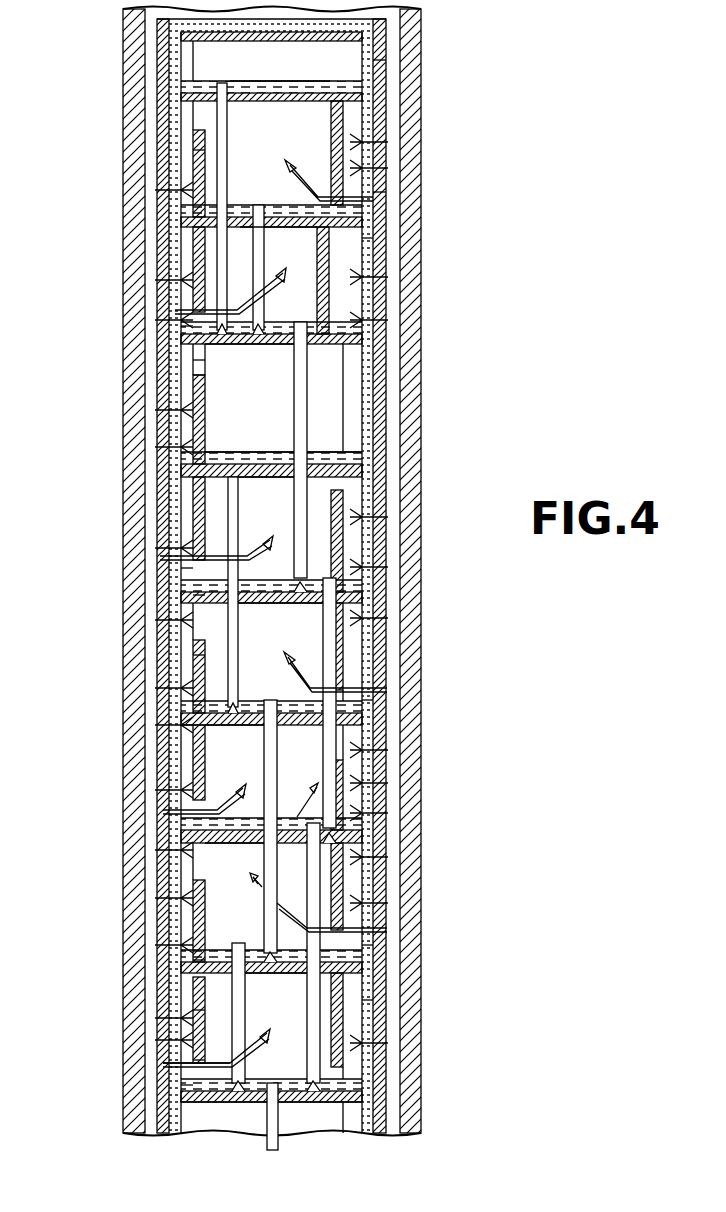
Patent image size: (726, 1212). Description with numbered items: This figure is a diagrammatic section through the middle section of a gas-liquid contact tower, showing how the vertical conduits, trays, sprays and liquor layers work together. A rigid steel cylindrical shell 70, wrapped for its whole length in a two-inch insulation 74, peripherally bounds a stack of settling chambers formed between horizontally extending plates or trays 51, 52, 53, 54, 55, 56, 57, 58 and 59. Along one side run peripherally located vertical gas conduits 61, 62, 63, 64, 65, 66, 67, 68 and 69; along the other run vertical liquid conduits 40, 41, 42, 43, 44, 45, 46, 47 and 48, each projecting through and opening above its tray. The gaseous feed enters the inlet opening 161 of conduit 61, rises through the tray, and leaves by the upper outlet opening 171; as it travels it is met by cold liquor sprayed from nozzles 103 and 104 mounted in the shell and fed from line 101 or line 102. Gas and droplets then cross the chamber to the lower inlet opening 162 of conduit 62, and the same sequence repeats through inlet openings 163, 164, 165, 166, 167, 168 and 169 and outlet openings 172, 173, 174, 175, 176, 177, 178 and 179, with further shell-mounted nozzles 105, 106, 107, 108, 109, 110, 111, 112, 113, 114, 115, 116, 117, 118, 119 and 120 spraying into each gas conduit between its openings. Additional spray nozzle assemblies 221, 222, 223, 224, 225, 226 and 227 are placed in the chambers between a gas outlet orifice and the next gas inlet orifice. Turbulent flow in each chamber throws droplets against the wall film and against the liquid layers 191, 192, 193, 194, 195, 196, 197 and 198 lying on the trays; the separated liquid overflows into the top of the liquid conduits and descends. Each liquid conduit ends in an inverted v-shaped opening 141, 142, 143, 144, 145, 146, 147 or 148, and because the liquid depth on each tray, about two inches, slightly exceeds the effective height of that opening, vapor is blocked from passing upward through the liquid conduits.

The vertical liquid conduit 40 is at (270, 1140).
The vertical liquid conduit 41 is at (312, 1043).
The vertical liquid conduit 42 is at (248, 1016).
The vertical liquid conduit 43 is at (262, 770).
The vertical liquid conduit 44 is at (322, 636).
The vertical liquid conduit 45 is at (240, 490).
The vertical liquid conduit 46 is at (292, 410).
The vertical liquid conduit 47 is at (262, 235).
The vertical liquid conduit 48 is at (224, 85).
The tray 51 is at (352, 1135).
The tray 52 is at (195, 960).
The tray 53 is at (218, 835).
The tray 54 is at (277, 725).
The tray 55 is at (195, 595).
The tray 56 is at (233, 477).
The tray 57 is at (308, 370).
The tray 58 is at (372, 221).
The tray 59 is at (292, 81).
The gas conduit 61 is at (375, 1001).
The gas conduit 62 is at (195, 1010).
The gas conduit 63 is at (375, 761).
The gas conduit 64 is at (200, 655).
The gas conduit 65 is at (368, 541).
The gas conduit 66 is at (206, 405).
The gas conduit 67 is at (368, 259).
The gas conduit 68 is at (198, 150).
The gas conduit 69 is at (385, 65).
The shell 70 is at (405, 302).
The insulation 74 is at (405, 412).
The line 101 is at (148, 48).
The line 102 is at (396, 123).
The spray nozzle 103 is at (400, 1031).
The spray nozzle 104 is at (185, 1045).
The spray nozzle 105 is at (367, 871).
The spray nozzle 106 is at (367, 791).
The spray nozzle 107 is at (192, 998).
The spray nozzle 108 is at (365, 502).
The spray nozzle 109 is at (367, 277).
The spray nozzle 110 is at (362, 80).
The spray nozzle 111 is at (185, 940).
The spray nozzle 112 is at (192, 898).
The spray nozzle 113 is at (192, 726).
The spray nozzle 114 is at (192, 688).
The spray nozzle 115 is at (192, 447).
The spray nozzle 116 is at (192, 412).
The spray nozzle 117 is at (193, 279).
The spray nozzle 118 is at (183, 190).
The spray nozzle 119 is at (372, 165).
The spray nozzle 120 is at (372, 141).
The inverted v-shaped opening 141 is at (310, 1102).
The inverted v-shaped opening 142 is at (238, 1102).
The inverted v-shaped opening 143 is at (262, 970).
The inverted v-shaped opening 144 is at (375, 829).
The inverted v-shaped opening 145 is at (212, 726).
The inverted v-shaped opening 146 is at (296, 590).
The inverted v-shaped opening 147 is at (258, 350).
The inverted v-shaped opening 148 is at (212, 344).
The inlet opening 161 is at (375, 1082).
The inlet opening 162 is at (195, 1060).
The inlet opening 163 is at (375, 946).
The inlet opening 164 is at (185, 790).
The inlet opening 165 is at (347, 683).
The inlet opening 166 is at (183, 568).
The inlet opening 167 is at (372, 327).
The inlet opening 168 is at (183, 326).
The inlet opening 169 is at (380, 193).
The outlet opening 171 is at (375, 968).
The outlet opening 172 is at (192, 850).
The outlet opening 173 is at (375, 719).
The outlet opening 174 is at (192, 618).
The outlet opening 175 is at (370, 479).
The outlet opening 176 is at (195, 360).
The outlet opening 177 is at (367, 239).
The outlet opening 178 is at (168, 122).
The outlet opening 179 is at (392, 52).
The liquid layer 191 is at (240, 1102).
The liquid layer 192 is at (250, 895).
The liquid layer 193 is at (316, 798).
The liquid layer 194 is at (288, 698).
The liquid layer 195 is at (282, 530).
The liquid layer 196 is at (350, 432).
The liquid layer 197 is at (295, 290).
The liquid layer 198 is at (280, 205).
The spray nozzle assembly 221 is at (183, 1086).
The spray nozzle assembly 222 is at (380, 915).
The spray nozzle assembly 223 is at (192, 815).
The spray nozzle assembly 224 is at (372, 701).
The spray nozzle assembly 225 is at (183, 548).
The spray nozzle assembly 226 is at (183, 312).
The spray nozzle assembly 227 is at (300, 165).